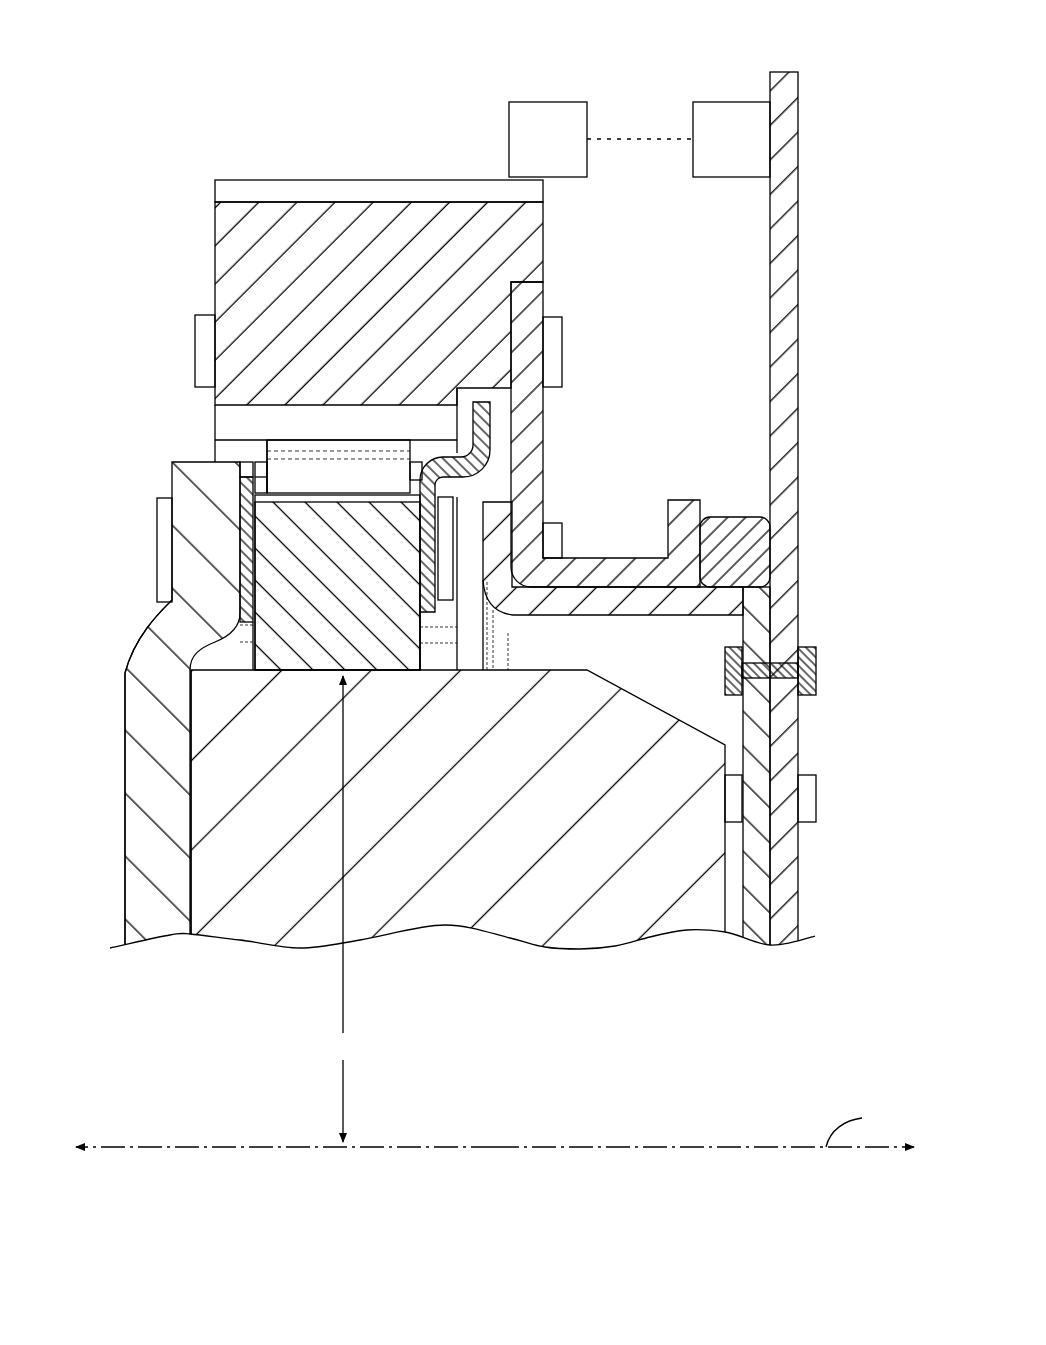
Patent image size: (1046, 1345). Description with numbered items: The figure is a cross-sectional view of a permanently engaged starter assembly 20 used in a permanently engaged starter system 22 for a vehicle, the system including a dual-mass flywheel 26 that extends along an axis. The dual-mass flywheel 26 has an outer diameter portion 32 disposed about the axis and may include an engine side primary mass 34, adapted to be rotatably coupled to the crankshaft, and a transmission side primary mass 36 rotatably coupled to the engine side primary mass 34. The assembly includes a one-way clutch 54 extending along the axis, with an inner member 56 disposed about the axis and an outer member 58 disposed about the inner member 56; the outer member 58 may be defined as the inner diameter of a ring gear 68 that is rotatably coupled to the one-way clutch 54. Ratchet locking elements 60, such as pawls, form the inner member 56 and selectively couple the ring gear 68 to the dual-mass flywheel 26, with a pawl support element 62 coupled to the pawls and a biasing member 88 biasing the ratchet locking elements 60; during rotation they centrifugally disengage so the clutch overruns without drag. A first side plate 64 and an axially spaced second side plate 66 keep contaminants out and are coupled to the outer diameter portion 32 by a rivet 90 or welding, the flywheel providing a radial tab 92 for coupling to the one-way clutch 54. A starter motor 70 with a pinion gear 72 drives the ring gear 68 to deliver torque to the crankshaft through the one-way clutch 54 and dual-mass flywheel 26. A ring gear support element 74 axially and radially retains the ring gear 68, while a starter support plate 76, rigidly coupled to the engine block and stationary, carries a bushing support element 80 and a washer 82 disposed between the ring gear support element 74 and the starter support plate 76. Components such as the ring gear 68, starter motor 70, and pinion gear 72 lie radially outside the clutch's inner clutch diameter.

The permanently engaged starter system 22 is at (89, 78).
The permanently engaged starter assembly 20 is at (185, 148).
The ring gear 68 is at (243, 243).
The outer member 58 is at (317, 418).
The ratchet locking elements 60 is at (260, 440).
The biasing member 88 is at (260, 452).
The radial tab 92 is at (207, 492).
The inner member 56 is at (298, 477).
The pawl support element 62 is at (332, 585).
The one-way clutch 54 is at (275, 572).
The first side plate 64 is at (240, 537).
The ring gear support element 74 is at (543, 430).
The second side plate 66 is at (488, 456).
The washer 82 is at (765, 548).
The rivet 90 is at (157, 560).
The pinion gear 72 is at (548, 139).
The starter motor 70 is at (731, 139).
The starter support plate 76 is at (798, 232).
The bushing support element 80 is at (757, 876).
The engine side primary mass 34 is at (668, 918).
The dual-mass flywheel 26 is at (155, 927).
The transmission side primary mass 36 is at (135, 850).
The outer diameter portion 32 is at (113, 738).